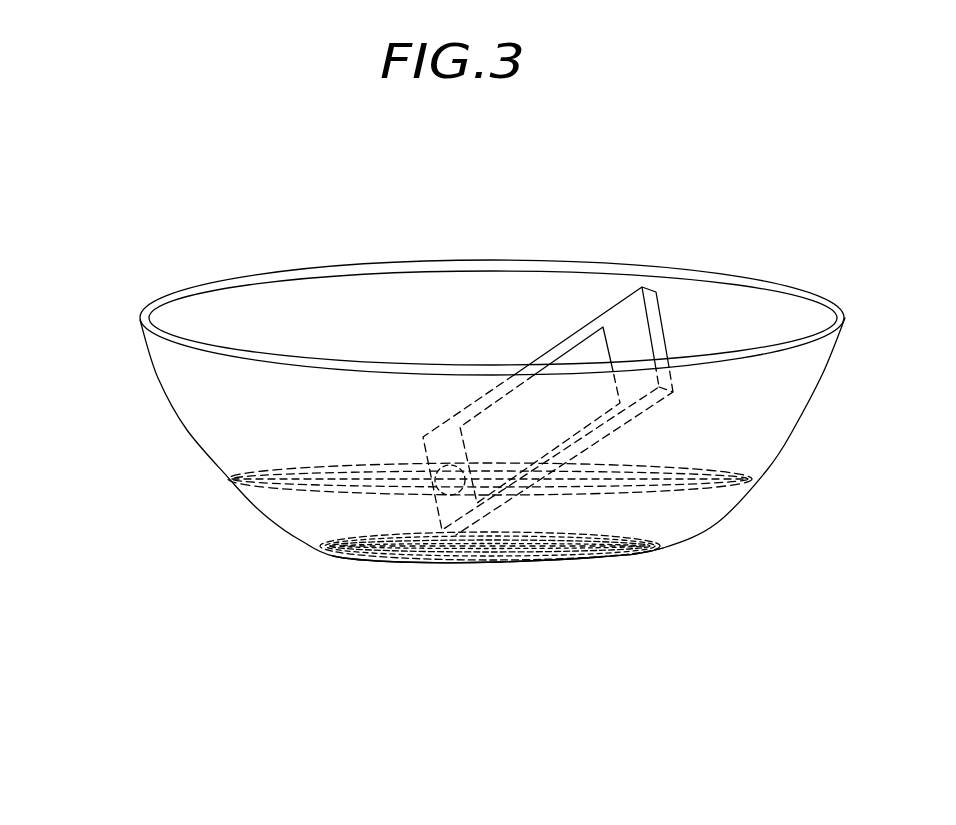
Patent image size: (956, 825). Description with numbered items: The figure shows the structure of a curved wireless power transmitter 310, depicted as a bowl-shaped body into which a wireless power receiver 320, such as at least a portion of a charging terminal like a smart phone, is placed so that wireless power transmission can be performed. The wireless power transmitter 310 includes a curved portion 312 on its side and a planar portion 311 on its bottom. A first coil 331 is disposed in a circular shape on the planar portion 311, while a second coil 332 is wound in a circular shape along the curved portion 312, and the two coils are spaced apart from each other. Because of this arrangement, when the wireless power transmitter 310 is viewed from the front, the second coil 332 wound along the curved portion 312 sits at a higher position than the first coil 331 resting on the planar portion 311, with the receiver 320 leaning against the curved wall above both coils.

The wireless power transmitter 310 is at (112, 307).
The planar portion 311 is at (497, 585).
The curved portion 312 is at (177, 448).
The wireless power receiver 320 is at (662, 319).
The first coil 331 is at (363, 566).
The second coil 332 is at (325, 456).